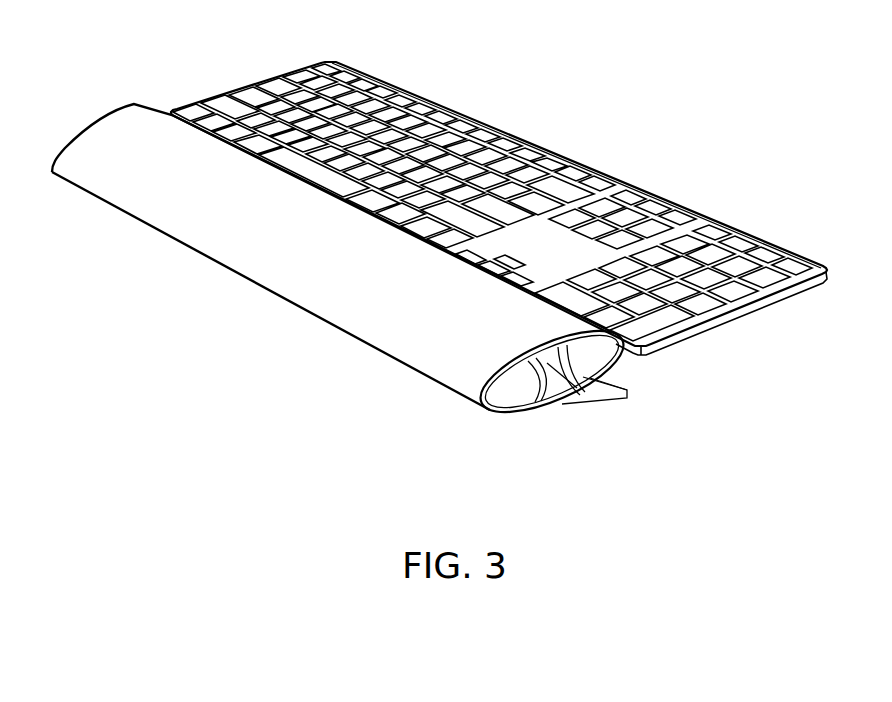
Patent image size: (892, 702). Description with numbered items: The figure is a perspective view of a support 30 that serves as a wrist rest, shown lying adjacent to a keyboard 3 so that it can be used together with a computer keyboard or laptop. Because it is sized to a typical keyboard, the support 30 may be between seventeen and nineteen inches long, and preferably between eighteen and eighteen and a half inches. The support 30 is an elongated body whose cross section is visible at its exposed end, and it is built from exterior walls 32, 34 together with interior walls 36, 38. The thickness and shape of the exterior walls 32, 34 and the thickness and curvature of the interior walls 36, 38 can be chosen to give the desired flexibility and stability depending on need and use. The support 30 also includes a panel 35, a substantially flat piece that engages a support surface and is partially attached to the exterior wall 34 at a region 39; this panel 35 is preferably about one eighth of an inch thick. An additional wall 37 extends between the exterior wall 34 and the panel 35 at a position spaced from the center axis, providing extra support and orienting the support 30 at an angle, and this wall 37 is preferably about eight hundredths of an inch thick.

The keyboard 3 is at (303, 97).
The support 30 is at (363, 294).
The exterior wall 32 is at (527, 403).
The exterior wall 34 is at (620, 363).
The panel 35 is at (608, 398).
The interior wall 36 is at (567, 393).
The additional wall 37 is at (566, 402).
The interior wall 38 is at (535, 402).
The region 39 is at (506, 418).